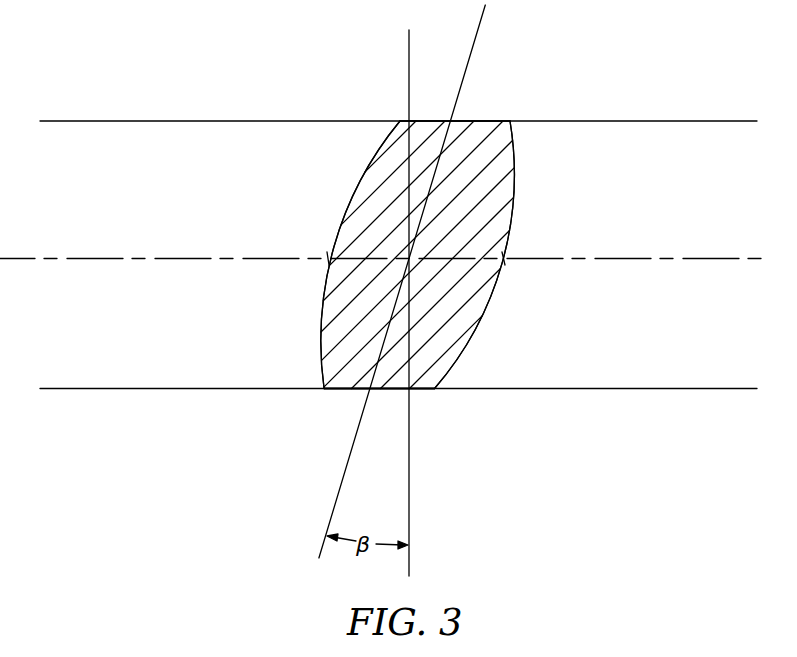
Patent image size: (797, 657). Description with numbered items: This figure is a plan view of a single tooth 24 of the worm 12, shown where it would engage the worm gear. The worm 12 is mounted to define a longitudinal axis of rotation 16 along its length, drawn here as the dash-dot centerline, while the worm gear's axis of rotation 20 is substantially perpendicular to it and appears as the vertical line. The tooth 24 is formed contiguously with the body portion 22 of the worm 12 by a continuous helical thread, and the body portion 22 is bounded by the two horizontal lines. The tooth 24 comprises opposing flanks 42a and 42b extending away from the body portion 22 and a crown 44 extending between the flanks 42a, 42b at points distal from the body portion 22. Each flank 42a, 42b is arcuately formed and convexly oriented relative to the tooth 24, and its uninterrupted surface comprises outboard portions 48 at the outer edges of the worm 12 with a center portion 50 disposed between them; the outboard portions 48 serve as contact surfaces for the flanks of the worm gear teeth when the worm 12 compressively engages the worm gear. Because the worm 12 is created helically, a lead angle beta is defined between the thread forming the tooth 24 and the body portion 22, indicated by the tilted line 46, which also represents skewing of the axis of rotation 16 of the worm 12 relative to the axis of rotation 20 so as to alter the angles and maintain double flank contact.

The worm 12 is at (278, 66).
The longitudinal axis of rotation 16 is at (15, 260).
The axis of rotation 20 is at (409, 560).
The body portion 22 is at (168, 120).
The tooth 24 is at (517, 186).
The flank 42a is at (321, 283).
The flank 42b is at (488, 312).
The crown 44 is at (425, 380).
The skewed axis of rotation 46 is at (342, 482).
The outboard portions 48 is at (381, 133).
The center portion 50 is at (329, 258).